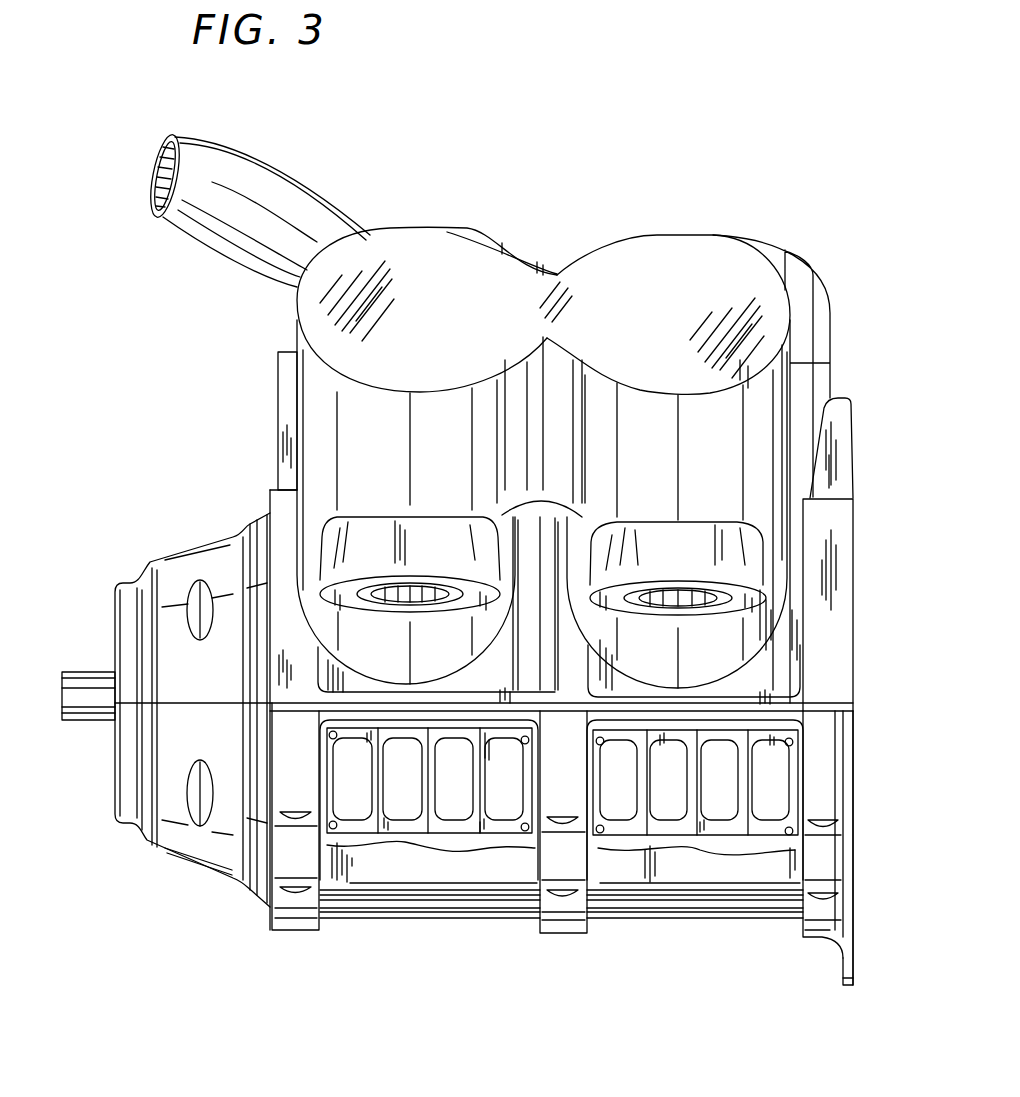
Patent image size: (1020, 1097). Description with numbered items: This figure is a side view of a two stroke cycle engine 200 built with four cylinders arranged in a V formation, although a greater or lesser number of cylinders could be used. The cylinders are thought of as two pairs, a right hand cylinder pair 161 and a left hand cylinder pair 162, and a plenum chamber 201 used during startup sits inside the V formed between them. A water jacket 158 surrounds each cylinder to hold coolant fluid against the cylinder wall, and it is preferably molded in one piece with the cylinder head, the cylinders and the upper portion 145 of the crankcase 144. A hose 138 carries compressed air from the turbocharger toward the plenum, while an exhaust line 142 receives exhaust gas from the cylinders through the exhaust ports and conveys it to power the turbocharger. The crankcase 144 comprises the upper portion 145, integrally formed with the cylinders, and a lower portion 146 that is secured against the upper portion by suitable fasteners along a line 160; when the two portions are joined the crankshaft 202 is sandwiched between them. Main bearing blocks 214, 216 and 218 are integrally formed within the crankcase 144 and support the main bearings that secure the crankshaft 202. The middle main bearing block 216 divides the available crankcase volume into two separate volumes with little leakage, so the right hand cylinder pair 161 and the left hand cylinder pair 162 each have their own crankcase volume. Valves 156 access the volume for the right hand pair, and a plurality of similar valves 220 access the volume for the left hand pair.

The hose 138 is at (199, 138).
The exhaust line 142 is at (433, 594).
The crankcase 144 is at (873, 524).
The upper portion 145 is at (869, 631).
The lower portion 146 is at (866, 878).
The valves 156 is at (703, 872).
The water jacket 158 is at (634, 237).
The line 160 is at (165, 702).
The right hand cylinder pair 161 is at (563, 402).
The left hand cylinder pair 162 is at (421, 192).
The engine 200 is at (460, 990).
The plenum chamber 201 is at (250, 439).
The crankshaft 202 is at (83, 723).
The main bearing block 214 is at (822, 963).
The main bearing block 216 is at (586, 957).
The main bearing block 218 is at (306, 953).
The valves 220 is at (500, 950).